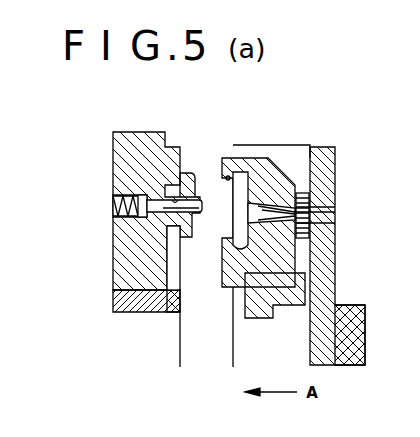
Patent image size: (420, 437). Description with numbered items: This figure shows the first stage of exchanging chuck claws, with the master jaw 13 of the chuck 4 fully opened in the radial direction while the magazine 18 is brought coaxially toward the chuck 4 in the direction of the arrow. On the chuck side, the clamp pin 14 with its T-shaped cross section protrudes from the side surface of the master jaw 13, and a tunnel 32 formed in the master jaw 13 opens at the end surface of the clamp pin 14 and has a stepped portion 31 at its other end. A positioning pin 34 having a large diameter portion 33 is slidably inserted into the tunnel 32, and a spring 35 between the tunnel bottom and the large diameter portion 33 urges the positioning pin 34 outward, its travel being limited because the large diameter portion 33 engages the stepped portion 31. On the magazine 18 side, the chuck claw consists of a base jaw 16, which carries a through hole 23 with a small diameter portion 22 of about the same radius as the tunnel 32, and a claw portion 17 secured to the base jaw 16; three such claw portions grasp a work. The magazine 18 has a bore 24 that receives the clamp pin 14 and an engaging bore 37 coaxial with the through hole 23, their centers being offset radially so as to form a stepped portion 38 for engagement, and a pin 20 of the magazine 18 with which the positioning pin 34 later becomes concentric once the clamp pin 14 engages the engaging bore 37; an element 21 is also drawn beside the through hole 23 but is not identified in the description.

The chuck 4 is at (136, 350).
The master jaw 13 is at (146, 140).
The clamp pin 14 is at (183, 238).
The base jaw 16 is at (258, 165).
The claw portion 17 is at (260, 319).
The magazine 18 is at (324, 148).
The pin 20 is at (336, 208).
The threaded insert 21 is at (305, 190).
The small diameter portion 22 is at (336, 223).
The through hole 23 is at (280, 182).
The bore 24 is at (244, 165).
The stepped portion 31 is at (124, 200).
The tunnel 32 is at (185, 190).
The large diameter portion 33 is at (140, 235).
The positioning pin 34 is at (196, 213).
The spring 35 is at (140, 218).
The engaging bore 37 is at (236, 240).
The stepped portion 38 is at (232, 290).